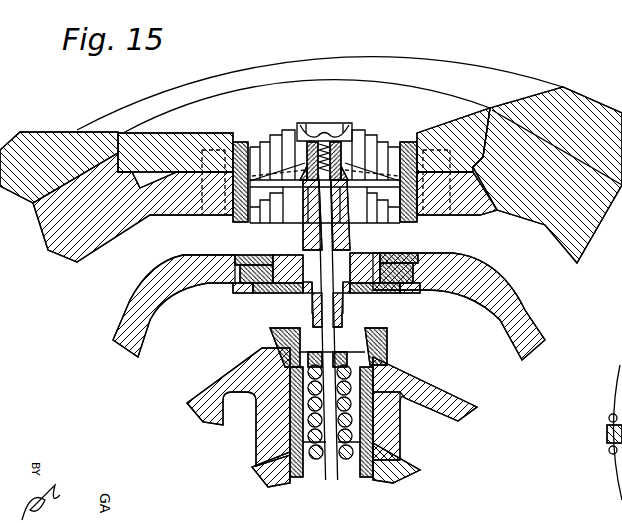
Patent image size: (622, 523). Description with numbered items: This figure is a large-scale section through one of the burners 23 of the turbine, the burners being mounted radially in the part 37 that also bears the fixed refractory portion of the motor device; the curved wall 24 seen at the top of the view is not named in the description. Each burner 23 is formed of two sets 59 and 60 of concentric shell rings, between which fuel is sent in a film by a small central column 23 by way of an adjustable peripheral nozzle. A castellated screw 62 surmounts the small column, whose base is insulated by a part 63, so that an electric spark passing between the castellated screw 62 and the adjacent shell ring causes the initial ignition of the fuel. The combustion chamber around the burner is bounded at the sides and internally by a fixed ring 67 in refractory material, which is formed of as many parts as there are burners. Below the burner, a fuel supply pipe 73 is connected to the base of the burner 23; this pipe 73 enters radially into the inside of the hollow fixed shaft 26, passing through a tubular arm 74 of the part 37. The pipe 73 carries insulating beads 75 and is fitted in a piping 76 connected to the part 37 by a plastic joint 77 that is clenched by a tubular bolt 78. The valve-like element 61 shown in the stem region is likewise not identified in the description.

The burner 23 is at (312, 228).
The casing wall 24 is at (258, 98).
The fixed longitudinal shaft 26 is at (395, 464).
The part supporting the fixed portion of the motor device 37 is at (490, 300).
The set of concentric shell rings 59 is at (373, 214).
The set of concentric shell rings 60 is at (372, 147).
The valve stem 61 is at (343, 172).
The castellated screw 62 is at (335, 128).
The insulating part 63 is at (292, 262).
The fixed ring 67 is at (545, 98).
The fuel supply pipe 73 is at (378, 341).
The tubular arm 74 is at (390, 420).
The insulating beads 75 is at (378, 383).
The piping 76 is at (270, 478).
The plastic joint 77 is at (303, 442).
The tubular bolt 78 is at (268, 378).